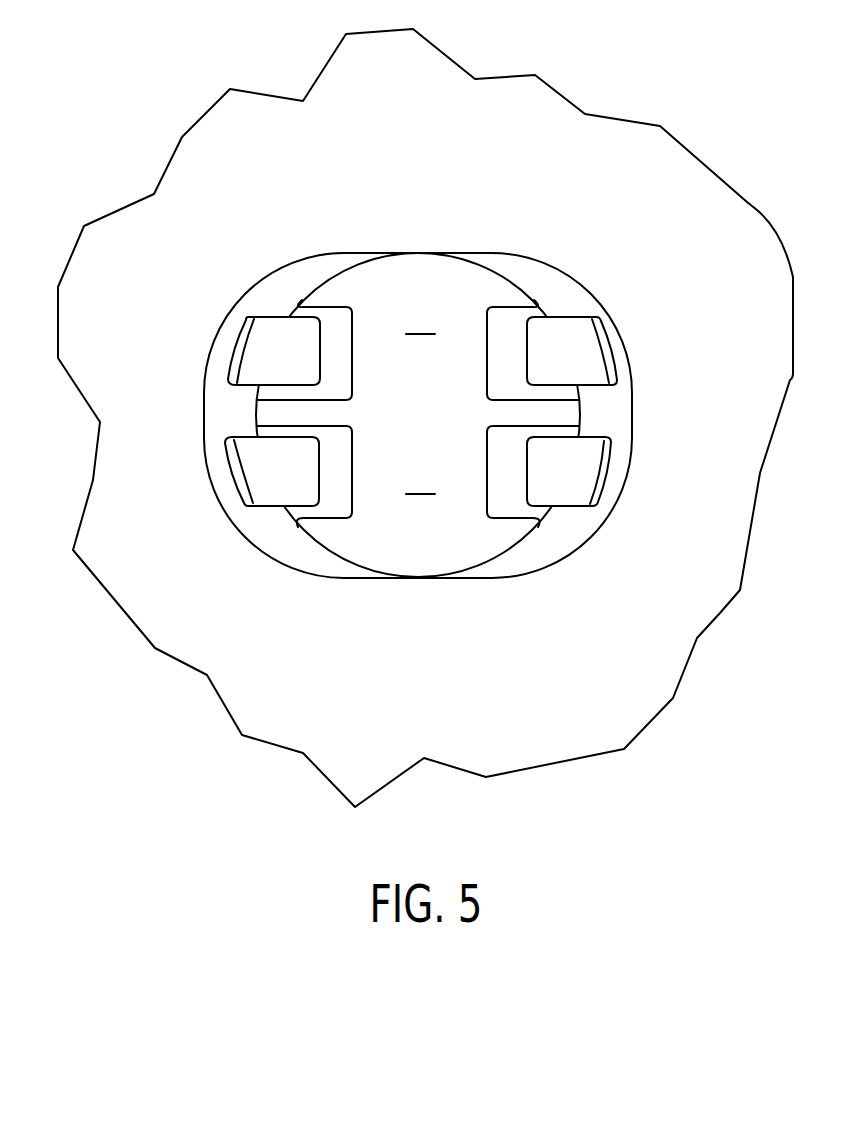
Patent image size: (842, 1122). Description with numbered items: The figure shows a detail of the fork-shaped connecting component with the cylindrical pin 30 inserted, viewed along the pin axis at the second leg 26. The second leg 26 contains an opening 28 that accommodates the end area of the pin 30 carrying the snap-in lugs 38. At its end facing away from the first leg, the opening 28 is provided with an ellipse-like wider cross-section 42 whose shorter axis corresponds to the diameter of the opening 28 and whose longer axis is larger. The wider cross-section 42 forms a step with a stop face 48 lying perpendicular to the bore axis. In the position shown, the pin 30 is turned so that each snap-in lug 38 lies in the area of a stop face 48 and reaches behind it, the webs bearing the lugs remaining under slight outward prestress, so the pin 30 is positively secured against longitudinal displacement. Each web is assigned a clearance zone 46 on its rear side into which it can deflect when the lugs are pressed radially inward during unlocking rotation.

The second leg 26 is at (670, 647).
The opening 28 is at (482, 265).
The cylindrical pin 30 is at (413, 562).
The snap-in lugs 38 is at (287, 479).
The wider cross-section 42 is at (577, 282).
The clearance zone 46 is at (330, 330).
The stop face 48 is at (615, 412).